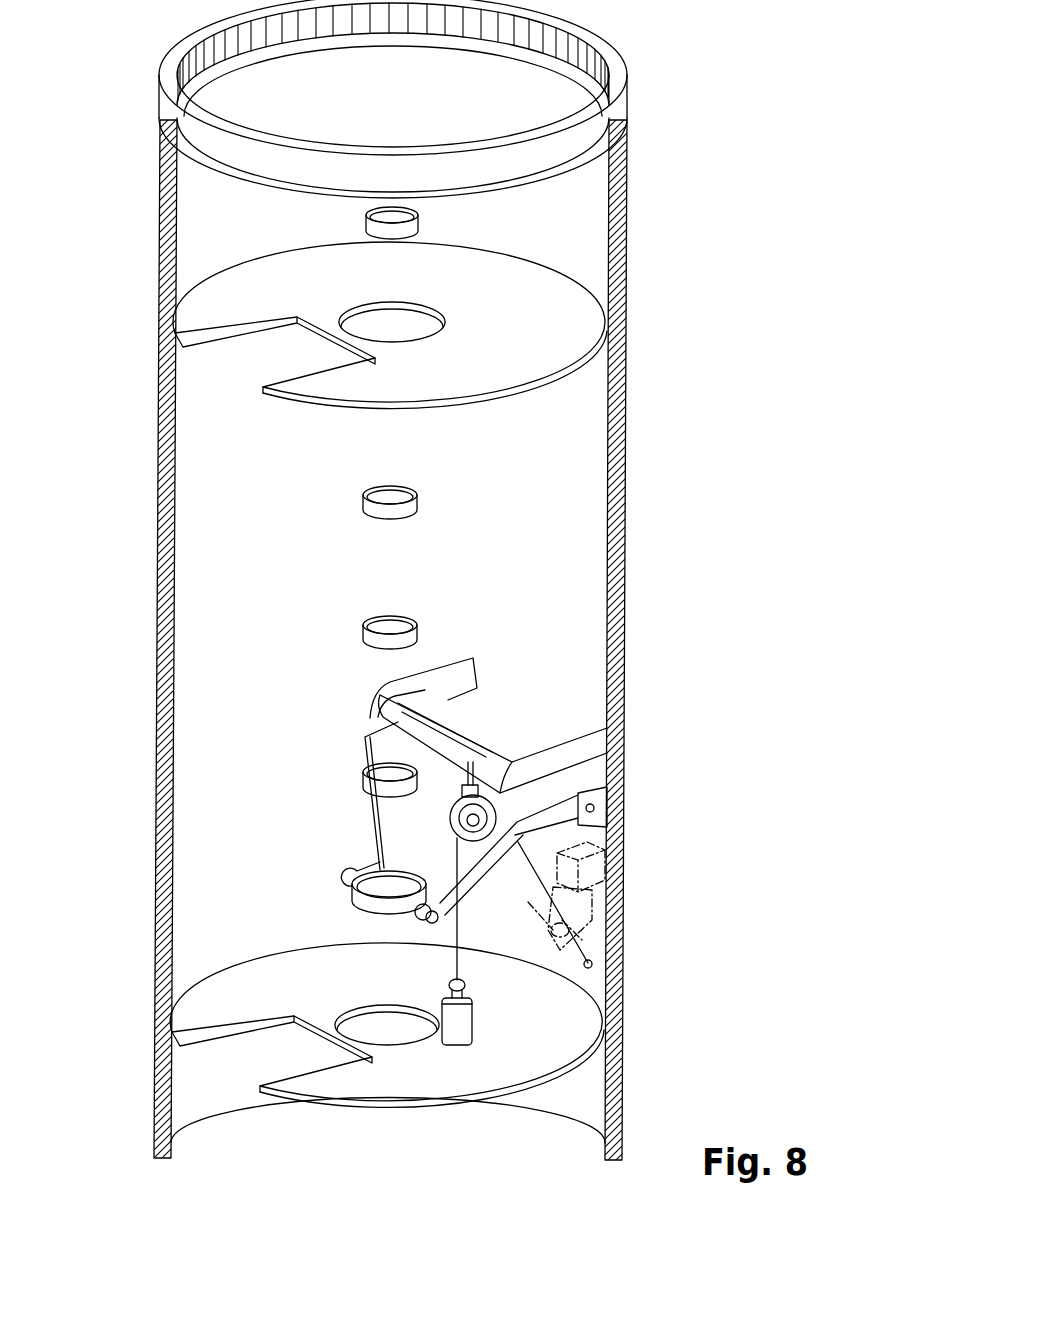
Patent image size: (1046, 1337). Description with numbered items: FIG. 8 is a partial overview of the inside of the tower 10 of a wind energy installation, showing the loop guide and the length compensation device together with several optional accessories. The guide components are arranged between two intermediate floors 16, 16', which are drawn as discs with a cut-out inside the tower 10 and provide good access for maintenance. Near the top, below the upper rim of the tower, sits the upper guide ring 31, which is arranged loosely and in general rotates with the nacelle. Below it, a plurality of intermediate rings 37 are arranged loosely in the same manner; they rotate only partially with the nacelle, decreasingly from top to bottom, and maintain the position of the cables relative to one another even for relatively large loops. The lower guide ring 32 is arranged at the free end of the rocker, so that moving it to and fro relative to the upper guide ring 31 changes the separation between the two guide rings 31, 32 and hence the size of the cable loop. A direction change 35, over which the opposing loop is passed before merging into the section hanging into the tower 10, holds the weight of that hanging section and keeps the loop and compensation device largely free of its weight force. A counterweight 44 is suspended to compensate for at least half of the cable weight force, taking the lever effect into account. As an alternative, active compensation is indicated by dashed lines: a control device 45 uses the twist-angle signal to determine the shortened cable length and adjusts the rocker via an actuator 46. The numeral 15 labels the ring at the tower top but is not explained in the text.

The tower 10 is at (625, 492).
The upper ring 15 is at (610, 118).
The intermediate floor 16 is at (459, 1025).
The intermediate floor 16' is at (465, 325).
The upper guide ring 31 is at (367, 223).
The lower guide ring 32 is at (352, 888).
The direction change 35 is at (463, 730).
The intermediate rings 37 is at (363, 502).
The counterweight 44 is at (447, 1037).
The control device 45 is at (595, 870).
The actuator 46 is at (593, 927).